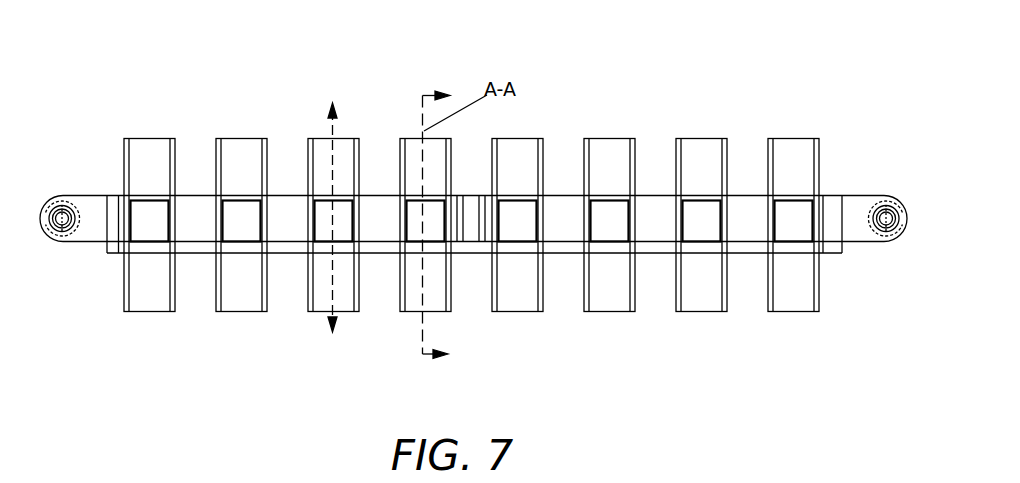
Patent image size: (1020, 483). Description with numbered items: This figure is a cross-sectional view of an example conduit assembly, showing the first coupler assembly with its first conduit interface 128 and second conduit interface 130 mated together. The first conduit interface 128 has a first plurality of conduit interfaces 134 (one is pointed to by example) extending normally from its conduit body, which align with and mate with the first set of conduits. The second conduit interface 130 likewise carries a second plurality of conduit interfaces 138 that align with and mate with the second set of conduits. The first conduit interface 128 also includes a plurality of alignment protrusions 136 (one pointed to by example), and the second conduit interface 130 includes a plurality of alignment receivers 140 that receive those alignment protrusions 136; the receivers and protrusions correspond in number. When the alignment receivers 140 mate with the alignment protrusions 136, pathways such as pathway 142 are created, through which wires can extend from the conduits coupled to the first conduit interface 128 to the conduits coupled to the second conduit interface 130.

The first conduit interface 128 is at (457, 248).
The second conduit interface 130 is at (287, 207).
The first plurality of conduit interfaces 134 is at (743, 315).
The plurality of alignment protrusions 136 is at (618, 253).
The second plurality of conduit interfaces 138 is at (623, 123).
The plurality of alignment receivers 140 is at (592, 203).
The pathway 142 is at (331, 167).